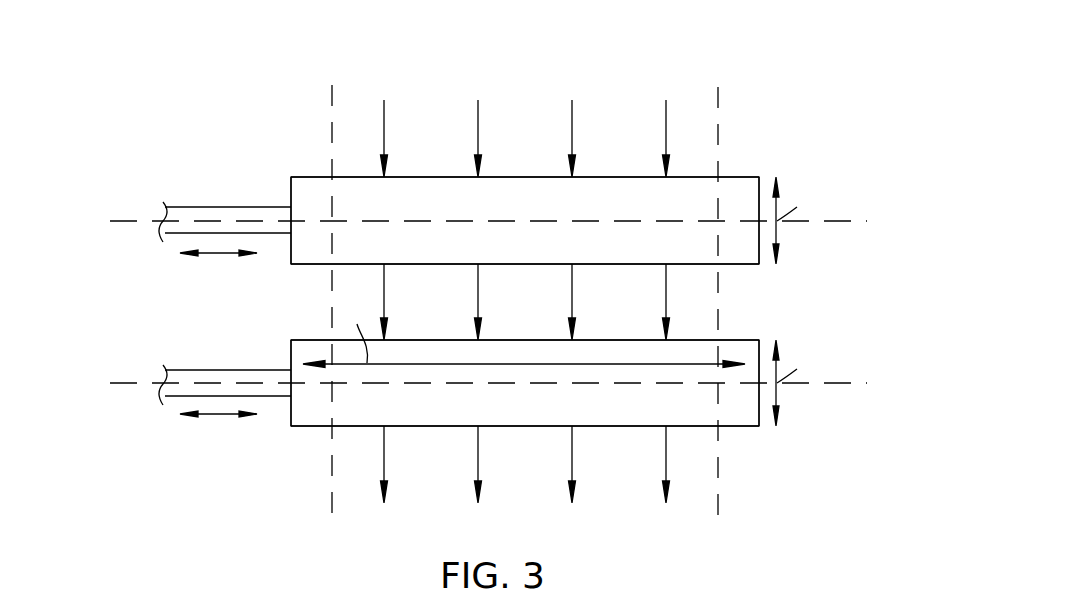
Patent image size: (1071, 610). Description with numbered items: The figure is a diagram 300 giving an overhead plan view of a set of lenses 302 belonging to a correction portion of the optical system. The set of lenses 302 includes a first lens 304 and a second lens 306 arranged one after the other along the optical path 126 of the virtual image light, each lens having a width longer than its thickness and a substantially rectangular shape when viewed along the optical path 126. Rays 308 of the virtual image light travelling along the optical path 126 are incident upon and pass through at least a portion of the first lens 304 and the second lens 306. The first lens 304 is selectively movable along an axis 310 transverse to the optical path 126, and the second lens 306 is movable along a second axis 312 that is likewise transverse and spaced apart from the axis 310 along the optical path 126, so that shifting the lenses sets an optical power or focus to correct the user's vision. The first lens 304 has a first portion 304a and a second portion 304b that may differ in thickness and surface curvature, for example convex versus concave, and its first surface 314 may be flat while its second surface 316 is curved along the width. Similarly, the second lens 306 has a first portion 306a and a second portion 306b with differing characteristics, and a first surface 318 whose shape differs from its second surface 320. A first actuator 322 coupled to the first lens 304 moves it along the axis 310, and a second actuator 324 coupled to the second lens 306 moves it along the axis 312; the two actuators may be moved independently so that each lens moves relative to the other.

The diagram 300 is at (880, 120).
The set of lenses 302 is at (738, 138).
The first lens 304 is at (797, 243).
The first portion of the first lens 304a is at (738, 177).
The second portion of the first lens 304b is at (320, 177).
The second lens 306 is at (797, 407).
The first portion of the second lens 306a is at (732, 338).
The second portion of the second lens 306b is at (320, 340).
The rays 308 is at (573, 128).
The axis 310 is at (152, 221).
The axis 312 is at (152, 384).
The first surface of the first lens 314 is at (307, 177).
The second surface of the first lens 316 is at (307, 264).
The first surface of the second lens 318 is at (303, 340).
The second surface of the second lens 320 is at (732, 427).
The first actuator 322 is at (197, 207).
The second actuator 324 is at (197, 370).
The optical path 126 is at (365, 99).